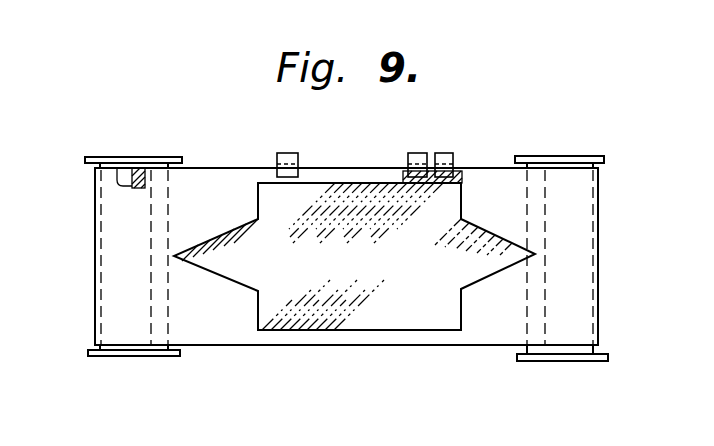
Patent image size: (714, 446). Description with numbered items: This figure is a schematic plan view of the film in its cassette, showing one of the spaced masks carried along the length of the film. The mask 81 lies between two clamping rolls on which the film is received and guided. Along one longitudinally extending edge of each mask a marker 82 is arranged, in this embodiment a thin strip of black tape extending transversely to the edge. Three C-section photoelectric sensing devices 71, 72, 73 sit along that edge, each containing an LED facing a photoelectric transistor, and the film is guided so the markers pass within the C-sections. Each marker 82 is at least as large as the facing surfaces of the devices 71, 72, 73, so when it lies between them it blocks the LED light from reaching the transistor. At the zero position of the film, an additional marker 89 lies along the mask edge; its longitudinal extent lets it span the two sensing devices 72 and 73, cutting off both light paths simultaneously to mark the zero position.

The mask 81 is at (133, 322).
The marker 82 is at (118, 168).
The photoelectric sensing device 71 is at (288, 152).
The photoelectric sensing device 72 is at (418, 153).
The photoelectric sensing device 73 is at (448, 153).
The additional marker 89 is at (403, 172).